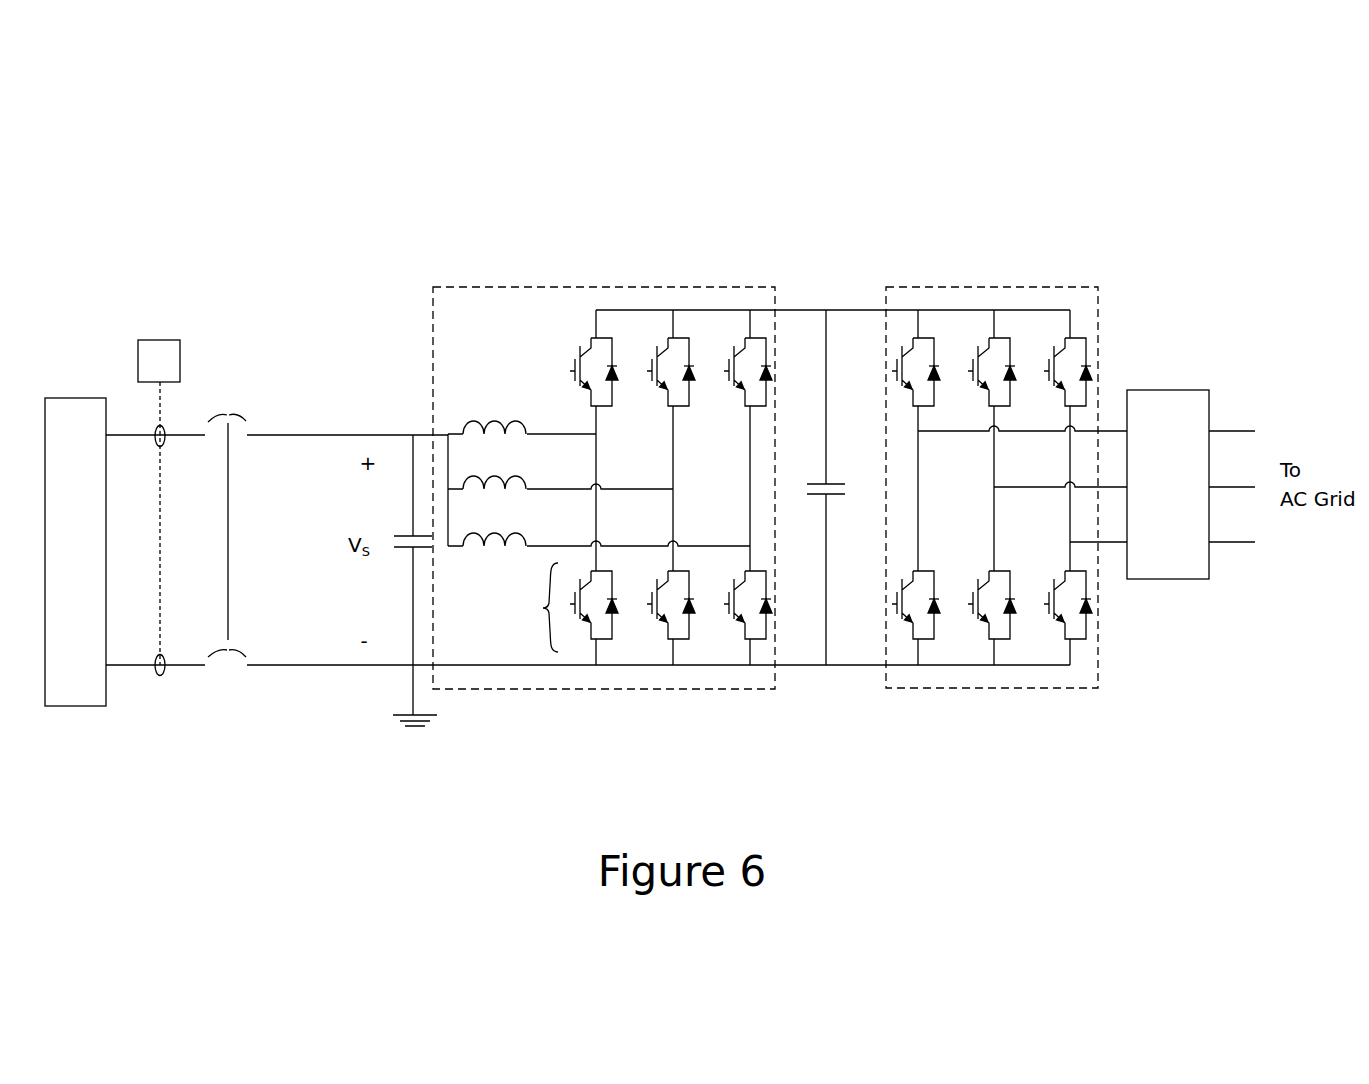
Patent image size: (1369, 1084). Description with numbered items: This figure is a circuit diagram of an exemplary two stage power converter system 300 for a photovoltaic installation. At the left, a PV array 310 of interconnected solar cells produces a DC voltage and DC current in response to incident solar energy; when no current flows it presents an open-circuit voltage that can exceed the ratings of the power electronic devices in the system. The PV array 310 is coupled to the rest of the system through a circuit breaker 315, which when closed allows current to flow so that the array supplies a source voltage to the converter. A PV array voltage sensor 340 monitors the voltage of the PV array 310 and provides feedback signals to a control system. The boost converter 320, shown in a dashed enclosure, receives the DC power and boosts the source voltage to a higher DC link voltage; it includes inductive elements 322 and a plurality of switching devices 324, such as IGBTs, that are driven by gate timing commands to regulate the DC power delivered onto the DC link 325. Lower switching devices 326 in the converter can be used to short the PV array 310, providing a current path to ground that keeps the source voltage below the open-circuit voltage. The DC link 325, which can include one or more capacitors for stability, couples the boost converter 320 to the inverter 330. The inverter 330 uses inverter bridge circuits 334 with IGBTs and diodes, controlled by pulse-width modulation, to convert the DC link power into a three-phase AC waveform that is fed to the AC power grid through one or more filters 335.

The power converter system 300 is at (1193, 206).
The PV array 310 is at (73, 398).
The circuit breaker 315 is at (234, 409).
The boost converter 320 is at (515, 287).
The inductive elements 322 is at (471, 418).
The switching devices 324 is at (590, 338).
The DC link 325 is at (797, 310).
The switching devices 326 is at (631, 607).
The inverter 330 is at (988, 287).
The inverter bridge circuits 334 is at (912, 338).
The filters 335 is at (1170, 390).
The PV array voltage sensor 340 is at (163, 340).